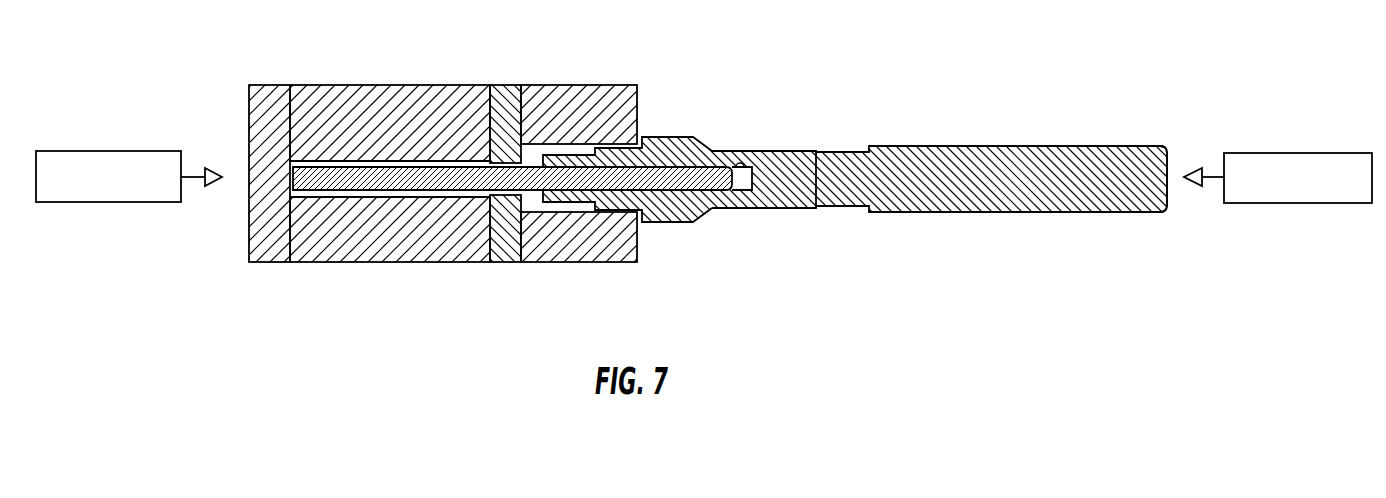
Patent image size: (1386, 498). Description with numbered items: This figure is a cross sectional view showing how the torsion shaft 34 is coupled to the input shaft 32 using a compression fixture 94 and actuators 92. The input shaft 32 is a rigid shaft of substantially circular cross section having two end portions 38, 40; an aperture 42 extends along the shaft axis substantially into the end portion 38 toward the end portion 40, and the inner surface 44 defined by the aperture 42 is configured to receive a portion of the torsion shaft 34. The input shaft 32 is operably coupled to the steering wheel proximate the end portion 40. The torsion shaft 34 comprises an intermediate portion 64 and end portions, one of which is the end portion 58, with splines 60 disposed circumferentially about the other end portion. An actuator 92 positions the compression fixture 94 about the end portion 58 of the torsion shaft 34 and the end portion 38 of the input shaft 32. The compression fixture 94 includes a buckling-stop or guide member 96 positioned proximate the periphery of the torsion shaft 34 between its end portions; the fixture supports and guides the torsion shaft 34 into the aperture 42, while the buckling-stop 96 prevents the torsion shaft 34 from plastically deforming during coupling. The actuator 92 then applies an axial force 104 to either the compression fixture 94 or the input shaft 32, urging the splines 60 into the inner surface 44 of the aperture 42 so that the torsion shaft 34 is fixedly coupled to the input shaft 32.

The input shaft 32 is at (943, 218).
The torsion shaft 34 is at (391, 200).
The end portion 38 is at (694, 223).
The end portion 40 is at (1142, 146).
The aperture 42 is at (747, 186).
The inner surface 44 is at (739, 165).
The end portion 58 is at (323, 166).
The splines 60 is at (708, 167).
The intermediate portion 64 is at (476, 162).
The actuator 92 is at (100, 150).
The compression fixture 94 is at (321, 78).
The buckling-stop 96 is at (507, 262).
The axial force 104 is at (203, 183).